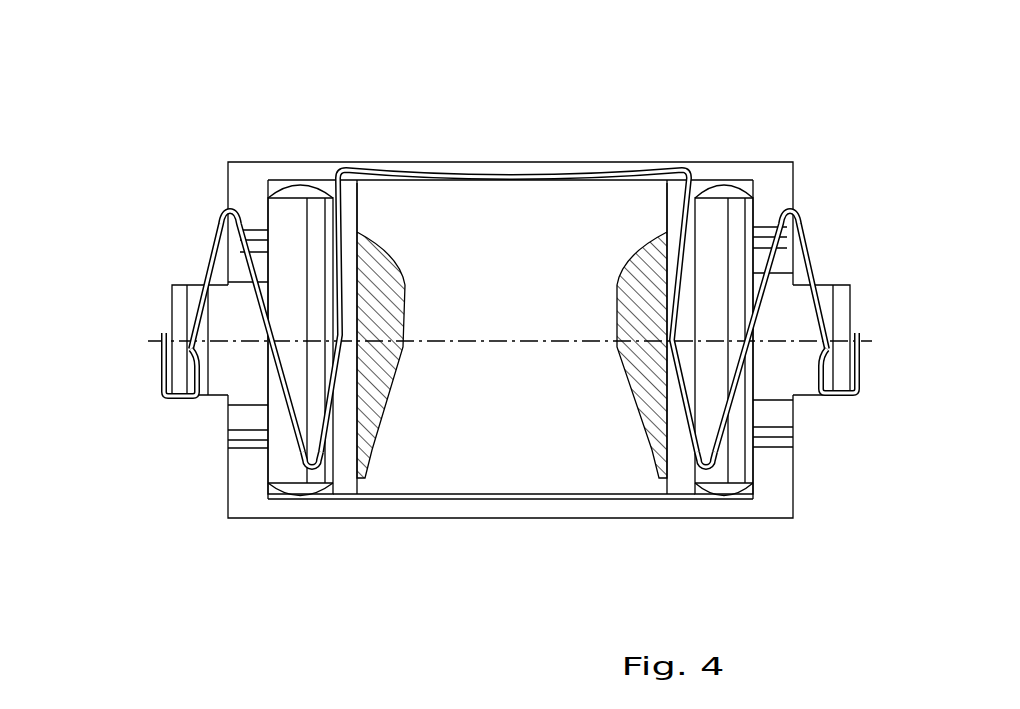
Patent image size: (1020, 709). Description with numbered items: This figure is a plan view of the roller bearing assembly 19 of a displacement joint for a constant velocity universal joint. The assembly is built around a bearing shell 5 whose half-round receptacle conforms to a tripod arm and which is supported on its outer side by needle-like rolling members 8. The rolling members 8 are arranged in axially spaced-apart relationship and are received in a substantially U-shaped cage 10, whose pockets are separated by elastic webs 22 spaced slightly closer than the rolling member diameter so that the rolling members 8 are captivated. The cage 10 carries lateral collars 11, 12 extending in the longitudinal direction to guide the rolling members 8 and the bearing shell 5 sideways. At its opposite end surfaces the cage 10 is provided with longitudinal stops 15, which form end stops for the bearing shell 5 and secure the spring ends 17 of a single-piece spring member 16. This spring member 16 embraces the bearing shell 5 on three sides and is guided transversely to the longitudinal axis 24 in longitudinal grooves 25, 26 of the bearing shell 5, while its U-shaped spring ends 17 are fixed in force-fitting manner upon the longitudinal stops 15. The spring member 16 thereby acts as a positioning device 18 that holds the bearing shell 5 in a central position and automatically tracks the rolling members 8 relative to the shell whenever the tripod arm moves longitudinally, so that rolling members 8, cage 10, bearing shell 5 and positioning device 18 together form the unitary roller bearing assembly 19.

The bearing shell 5 is at (542, 457).
The rolling members 8 is at (289, 210).
The cage 10 is at (234, 530).
The lateral collar 11 is at (731, 508).
The lateral collar 12 is at (718, 172).
The longitudinal stop 15 is at (180, 302).
The spring member 16 is at (313, 476).
The spring end 17 is at (160, 387).
The positioning device 18 is at (170, 231).
The roller bearing assembly 19 is at (424, 141).
The web 22 is at (242, 193).
The longitudinal axis 24 is at (465, 345).
The longitudinal groove 25 is at (343, 498).
The longitudinal groove 26 is at (673, 488).